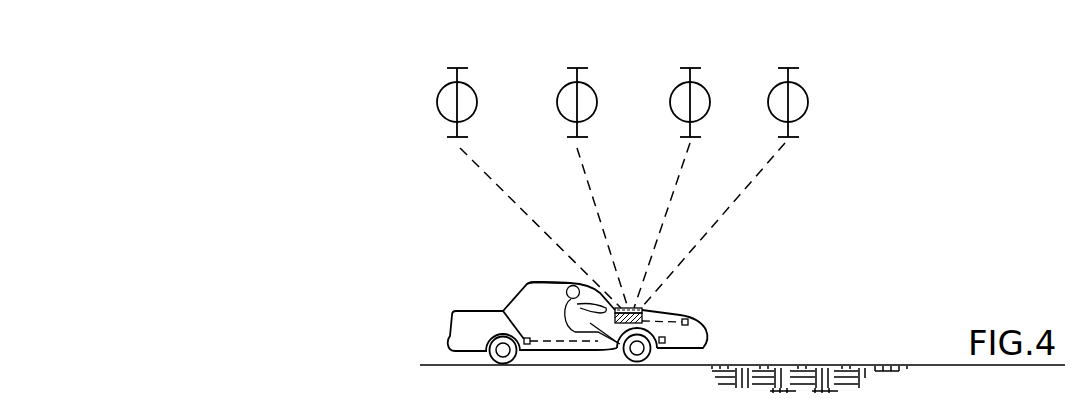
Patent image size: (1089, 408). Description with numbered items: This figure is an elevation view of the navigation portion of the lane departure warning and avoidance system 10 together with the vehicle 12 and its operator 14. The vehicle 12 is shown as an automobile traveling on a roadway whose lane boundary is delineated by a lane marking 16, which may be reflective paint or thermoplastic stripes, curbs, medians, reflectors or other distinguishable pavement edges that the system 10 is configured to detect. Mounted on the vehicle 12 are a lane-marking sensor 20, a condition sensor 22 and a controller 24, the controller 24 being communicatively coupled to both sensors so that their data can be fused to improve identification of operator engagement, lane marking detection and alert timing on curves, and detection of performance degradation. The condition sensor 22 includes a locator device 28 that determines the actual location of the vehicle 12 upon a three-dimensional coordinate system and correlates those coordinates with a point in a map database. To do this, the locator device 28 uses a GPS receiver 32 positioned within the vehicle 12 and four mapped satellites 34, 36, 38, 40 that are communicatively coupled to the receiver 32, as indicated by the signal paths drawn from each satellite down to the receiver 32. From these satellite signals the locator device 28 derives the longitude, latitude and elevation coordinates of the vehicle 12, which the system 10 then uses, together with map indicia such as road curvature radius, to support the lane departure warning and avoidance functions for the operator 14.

The lane departure warning and avoidance system 10 is at (888, 183).
The vehicle 12 is at (470, 311).
The operator 14 is at (552, 285).
The lane marking 16 is at (900, 365).
The lane-marking sensor 20 is at (688, 319).
The condition sensor 22 is at (503, 311).
The controller 24 is at (644, 318).
The locator device 28 is at (480, 218).
The GPS receiver 32 is at (645, 310).
The mapped satellite 34 is at (471, 91).
The mapped satellite 36 is at (591, 91).
The mapped satellite 38 is at (704, 91).
The mapped satellite 40 is at (802, 91).